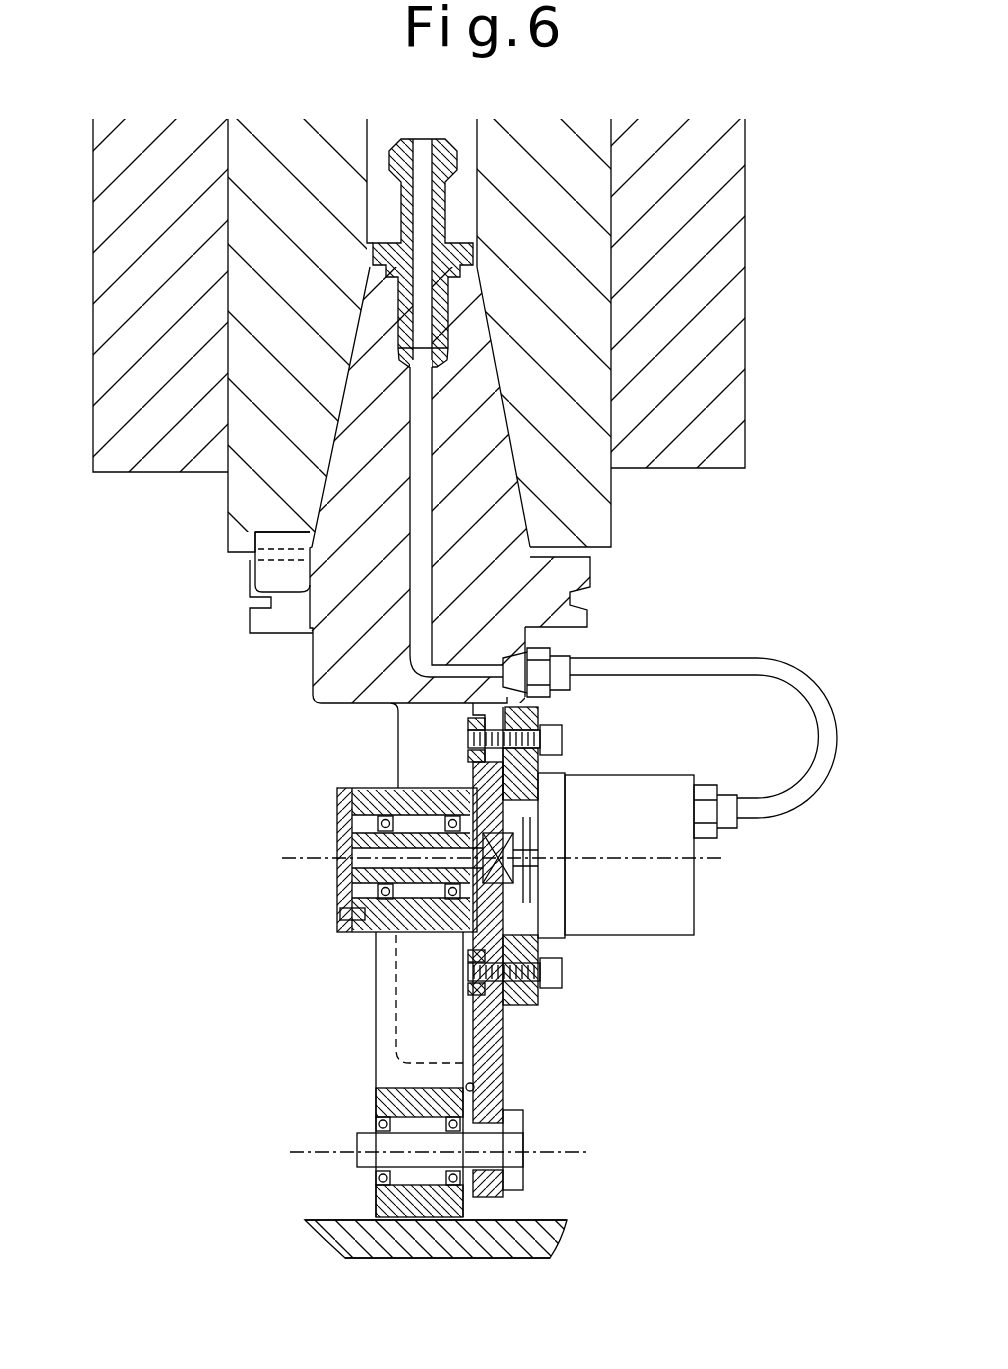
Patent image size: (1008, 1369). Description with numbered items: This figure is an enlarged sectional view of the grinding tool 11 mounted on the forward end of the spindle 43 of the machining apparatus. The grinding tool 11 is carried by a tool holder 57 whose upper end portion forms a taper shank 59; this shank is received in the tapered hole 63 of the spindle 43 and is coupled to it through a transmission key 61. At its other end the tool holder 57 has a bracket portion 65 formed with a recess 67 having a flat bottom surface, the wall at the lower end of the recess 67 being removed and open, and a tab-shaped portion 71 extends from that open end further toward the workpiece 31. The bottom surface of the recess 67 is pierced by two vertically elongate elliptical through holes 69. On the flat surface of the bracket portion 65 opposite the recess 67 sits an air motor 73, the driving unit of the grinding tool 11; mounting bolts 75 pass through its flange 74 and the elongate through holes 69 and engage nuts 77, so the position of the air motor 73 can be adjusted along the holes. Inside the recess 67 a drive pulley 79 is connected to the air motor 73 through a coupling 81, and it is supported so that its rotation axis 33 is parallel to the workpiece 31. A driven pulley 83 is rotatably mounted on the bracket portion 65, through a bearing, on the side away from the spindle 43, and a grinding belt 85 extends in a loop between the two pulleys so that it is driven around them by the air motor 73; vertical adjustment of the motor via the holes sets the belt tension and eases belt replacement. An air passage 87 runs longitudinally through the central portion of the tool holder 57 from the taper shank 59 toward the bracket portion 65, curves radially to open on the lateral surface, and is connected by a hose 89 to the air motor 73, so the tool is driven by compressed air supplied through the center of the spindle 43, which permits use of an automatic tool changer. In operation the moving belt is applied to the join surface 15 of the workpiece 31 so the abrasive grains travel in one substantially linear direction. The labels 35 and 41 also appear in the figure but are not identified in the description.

The grinding tool 11 is at (310, 975).
The join surface 15 is at (548, 1219).
The workpiece 31 is at (338, 1228).
The rotation axis 33 is at (300, 858).
The tool spindle axis 35 is at (300, 1140).
The machine spindle 41 is at (728, 253).
The spindle 43 is at (598, 515).
The tool holder 57 is at (600, 570).
The taper shank 59 is at (507, 420).
The transmission key 61 is at (268, 572).
The tapered hole 63 is at (492, 366).
The bracket portion 65 is at (505, 1040).
The recess 67 is at (505, 1088).
The elongate through holes 69 is at (553, 765).
The tab-shaped portion 71 is at (495, 1202).
The air motor 73 is at (672, 918).
The flange 74 is at (543, 712).
The mounting bolts 75 is at (557, 738).
The nuts 77 is at (470, 755).
The drive pulley 79 is at (337, 790).
The coupling 81 is at (503, 862).
The driven pulley 83 is at (380, 1095).
The grinding belt 85 is at (530, 1248).
The air passage 87 is at (417, 627).
The hose 89 is at (750, 665).